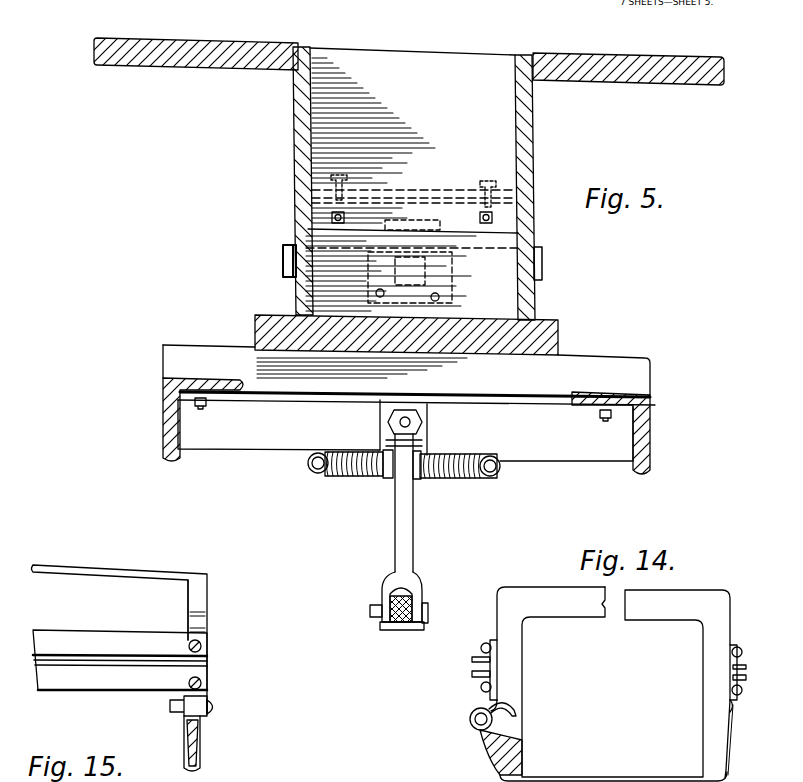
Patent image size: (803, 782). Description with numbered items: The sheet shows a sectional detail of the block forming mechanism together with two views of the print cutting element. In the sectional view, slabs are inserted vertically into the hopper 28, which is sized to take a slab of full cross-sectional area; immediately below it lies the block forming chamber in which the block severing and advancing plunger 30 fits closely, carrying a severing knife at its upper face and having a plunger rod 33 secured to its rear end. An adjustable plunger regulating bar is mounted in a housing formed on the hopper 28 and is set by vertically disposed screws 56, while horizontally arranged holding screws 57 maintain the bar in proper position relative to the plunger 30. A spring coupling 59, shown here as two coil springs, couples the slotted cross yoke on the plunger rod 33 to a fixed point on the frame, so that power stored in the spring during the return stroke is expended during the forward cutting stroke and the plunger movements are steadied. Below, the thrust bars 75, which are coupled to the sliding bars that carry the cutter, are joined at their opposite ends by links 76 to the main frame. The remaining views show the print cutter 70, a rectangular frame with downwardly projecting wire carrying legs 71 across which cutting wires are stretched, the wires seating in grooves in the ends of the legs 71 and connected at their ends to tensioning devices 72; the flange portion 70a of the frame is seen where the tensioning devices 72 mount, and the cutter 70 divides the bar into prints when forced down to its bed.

In FIG. 5, the hopper 28 is at (200, 70).
In FIG. 5, the vertically disposed screws 56 is at (347, 181).
In FIG. 5, the horizontally arranged holding screws 57 is at (302, 217).
In FIG. 5, the plunger rod 33 is at (452, 273).
In FIG. 5, the block severing and advancing plunger 30 is at (490, 297).
In FIG. 5, the spring coupling 59 is at (345, 479).
In FIG. 5, the links 76 is at (393, 551).
In FIG. 5, the thrust bars 75 is at (390, 599).
In FIG. 15, the print cutter 70 is at (190, 603).
In FIG. 14, the print cutter 70 is at (517, 683).
In FIG. 15, the rail flange 70a is at (100, 668).
In FIG. 14, the rail flange 70a is at (742, 665).
In FIG. 15, the tensioning devices 72 is at (213, 702).
In FIG. 14, the tensioning devices 72 is at (473, 712).
In FIG. 15, the wire carrying legs 71 is at (194, 733).
In FIG. 14, the wire carrying legs 71 is at (522, 757).